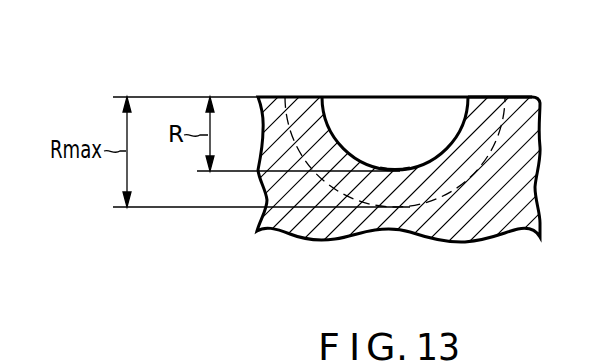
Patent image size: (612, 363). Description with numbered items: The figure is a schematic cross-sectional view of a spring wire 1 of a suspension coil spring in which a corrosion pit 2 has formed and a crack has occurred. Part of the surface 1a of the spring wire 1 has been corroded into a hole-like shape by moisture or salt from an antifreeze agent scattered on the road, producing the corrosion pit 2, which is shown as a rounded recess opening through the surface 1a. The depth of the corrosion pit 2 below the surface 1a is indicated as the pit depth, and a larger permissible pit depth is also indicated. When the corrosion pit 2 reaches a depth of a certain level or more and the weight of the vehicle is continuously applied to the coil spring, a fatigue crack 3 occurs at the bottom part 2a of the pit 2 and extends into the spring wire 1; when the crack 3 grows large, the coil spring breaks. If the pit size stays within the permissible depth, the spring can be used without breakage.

The spring wire 1 is at (518, 176).
The surface of the spring wire 1a is at (516, 97).
The corrosion pit 2 is at (396, 113).
The bottom part of the pit 2a is at (410, 206).
The fatigue crack 3 is at (410, 206).